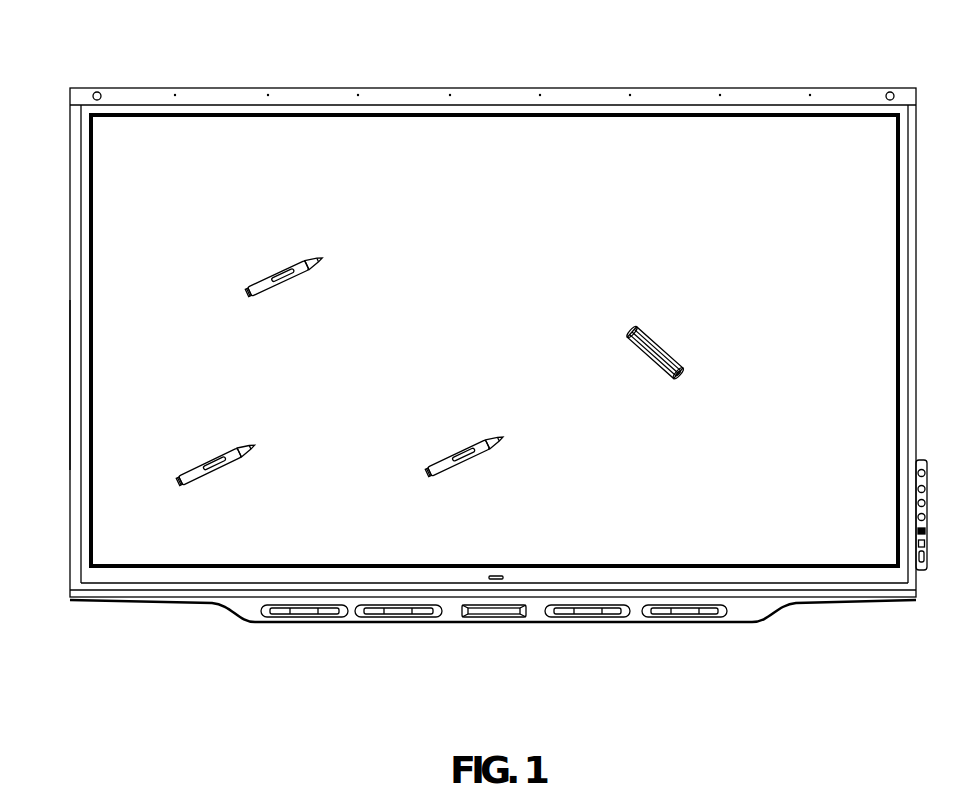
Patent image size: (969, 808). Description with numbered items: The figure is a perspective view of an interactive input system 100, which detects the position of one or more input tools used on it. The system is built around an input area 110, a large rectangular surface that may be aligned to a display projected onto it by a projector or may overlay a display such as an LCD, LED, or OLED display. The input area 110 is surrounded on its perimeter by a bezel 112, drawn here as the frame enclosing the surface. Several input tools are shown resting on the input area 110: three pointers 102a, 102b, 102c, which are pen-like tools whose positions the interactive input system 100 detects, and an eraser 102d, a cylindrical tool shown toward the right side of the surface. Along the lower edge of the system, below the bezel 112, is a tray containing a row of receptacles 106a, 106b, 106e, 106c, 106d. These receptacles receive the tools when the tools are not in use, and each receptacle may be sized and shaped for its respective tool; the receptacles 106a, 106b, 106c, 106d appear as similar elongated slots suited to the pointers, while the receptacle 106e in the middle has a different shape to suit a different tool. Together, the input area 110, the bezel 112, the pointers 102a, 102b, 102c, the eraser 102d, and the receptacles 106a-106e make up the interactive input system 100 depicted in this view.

The interactive input system 100 is at (344, 76).
The input area 110 is at (812, 223).
The bezel 112 is at (77, 383).
The pointer 102a is at (272, 275).
The pointer 102b is at (228, 455).
The pointer 102c is at (462, 450).
The eraser 102d is at (638, 332).
The receptacle 106a is at (298, 612).
The receptacle 106b is at (408, 612).
The receptacle 106c is at (580, 612).
The receptacle 106d is at (697, 612).
The receptacle 106e is at (505, 612).